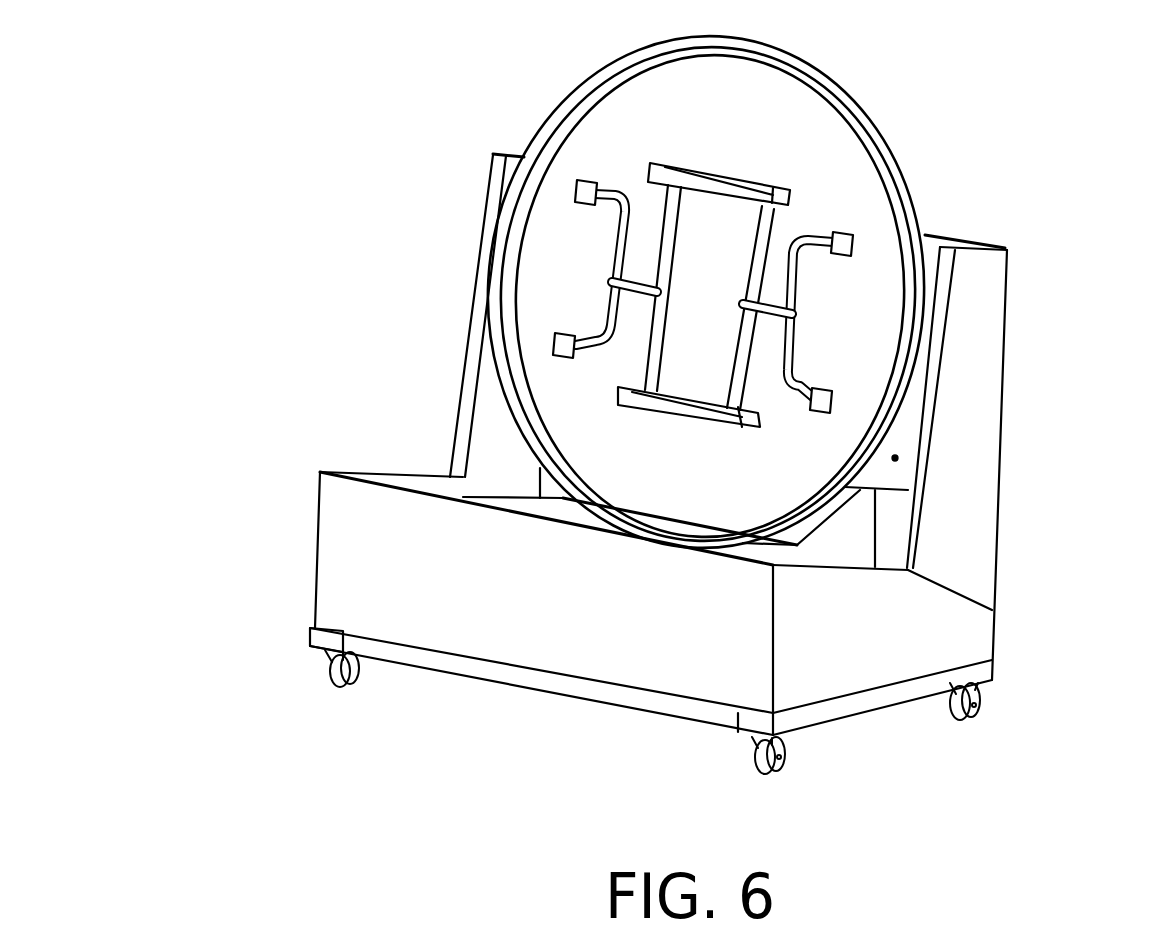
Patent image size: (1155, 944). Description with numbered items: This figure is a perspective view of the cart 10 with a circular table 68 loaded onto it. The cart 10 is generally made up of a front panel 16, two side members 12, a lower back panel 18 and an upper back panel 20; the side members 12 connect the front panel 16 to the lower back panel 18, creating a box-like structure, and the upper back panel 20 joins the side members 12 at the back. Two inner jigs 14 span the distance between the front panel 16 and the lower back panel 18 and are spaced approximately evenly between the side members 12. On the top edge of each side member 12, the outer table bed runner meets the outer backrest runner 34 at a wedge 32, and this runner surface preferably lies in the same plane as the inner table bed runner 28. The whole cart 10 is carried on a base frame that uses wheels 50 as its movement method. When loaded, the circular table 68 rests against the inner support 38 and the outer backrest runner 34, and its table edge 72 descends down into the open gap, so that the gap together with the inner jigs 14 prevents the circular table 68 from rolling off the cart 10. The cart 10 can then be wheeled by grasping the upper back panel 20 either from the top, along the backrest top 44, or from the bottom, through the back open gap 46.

The cart 10 is at (348, 320).
The side member 12 is at (950, 567).
The inner jig 14 is at (847, 523).
The front panel 16 is at (355, 542).
The lower back panel 18 is at (888, 520).
The upper back panel 20 is at (940, 247).
The inner table bed runner 28 is at (752, 547).
The wedge 32 is at (908, 570).
The outer backrest runner 34 is at (913, 470).
The inner support 38 is at (800, 542).
The backrest top 44 is at (995, 247).
The back open gap 46 is at (895, 458).
The wheel 50 is at (978, 708).
The circular table 68 is at (804, 143).
The table edge 72 is at (562, 488).